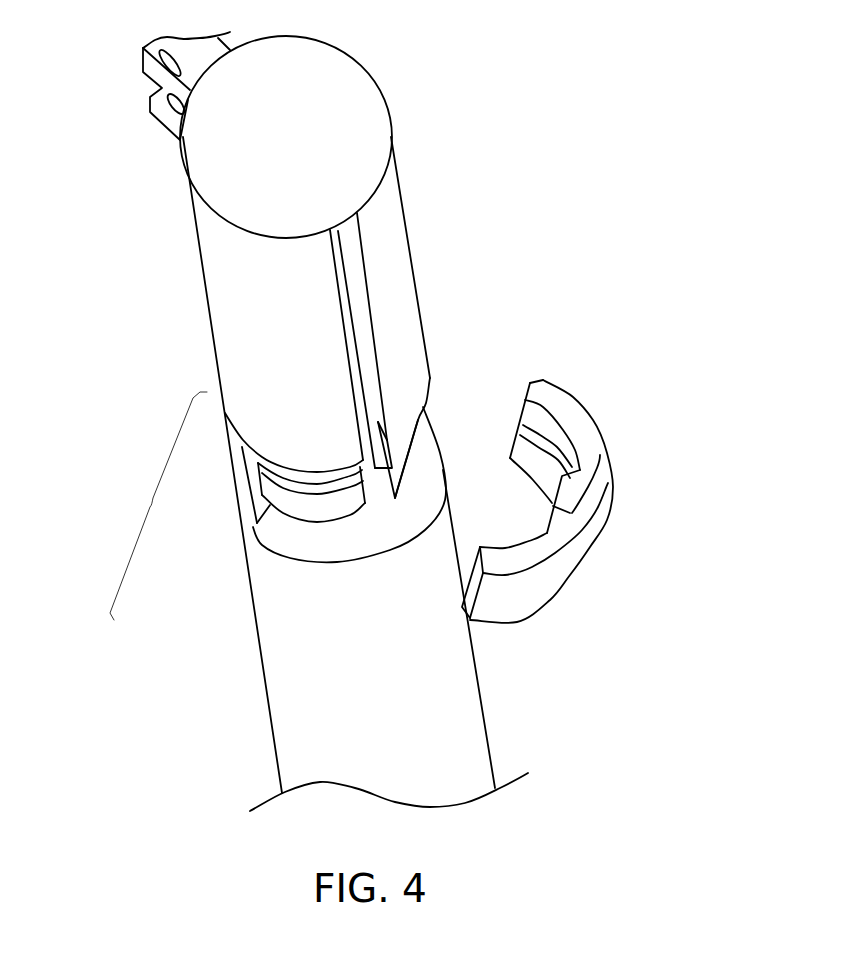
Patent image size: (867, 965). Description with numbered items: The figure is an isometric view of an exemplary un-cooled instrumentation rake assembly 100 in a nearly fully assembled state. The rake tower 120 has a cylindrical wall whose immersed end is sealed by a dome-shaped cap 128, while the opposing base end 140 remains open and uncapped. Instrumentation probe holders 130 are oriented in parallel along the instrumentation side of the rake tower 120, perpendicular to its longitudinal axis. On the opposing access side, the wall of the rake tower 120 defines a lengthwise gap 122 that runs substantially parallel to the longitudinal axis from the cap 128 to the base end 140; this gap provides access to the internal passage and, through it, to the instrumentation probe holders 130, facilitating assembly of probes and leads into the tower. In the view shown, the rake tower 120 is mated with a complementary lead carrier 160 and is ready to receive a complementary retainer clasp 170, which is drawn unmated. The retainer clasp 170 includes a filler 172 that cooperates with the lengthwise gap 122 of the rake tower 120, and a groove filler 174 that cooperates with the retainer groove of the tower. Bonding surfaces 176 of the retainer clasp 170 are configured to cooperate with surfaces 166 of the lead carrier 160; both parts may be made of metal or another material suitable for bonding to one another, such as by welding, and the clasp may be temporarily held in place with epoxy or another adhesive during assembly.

The instrumentation rake assembly 100 is at (463, 88).
The rake tower 120 is at (414, 246).
The lengthwise gap 122 is at (368, 329).
The dome-shaped cap 128 is at (269, 138).
The instrumentation probe holders 130 is at (153, 121).
The base end 140 is at (150, 503).
The lead carrier 160 is at (424, 703).
The surfaces 166 is at (322, 545).
The retainer clasp 170 is at (568, 482).
The filler 172 is at (569, 490).
The groove filler 174 is at (516, 407).
The bonding surfaces 176 is at (581, 412).